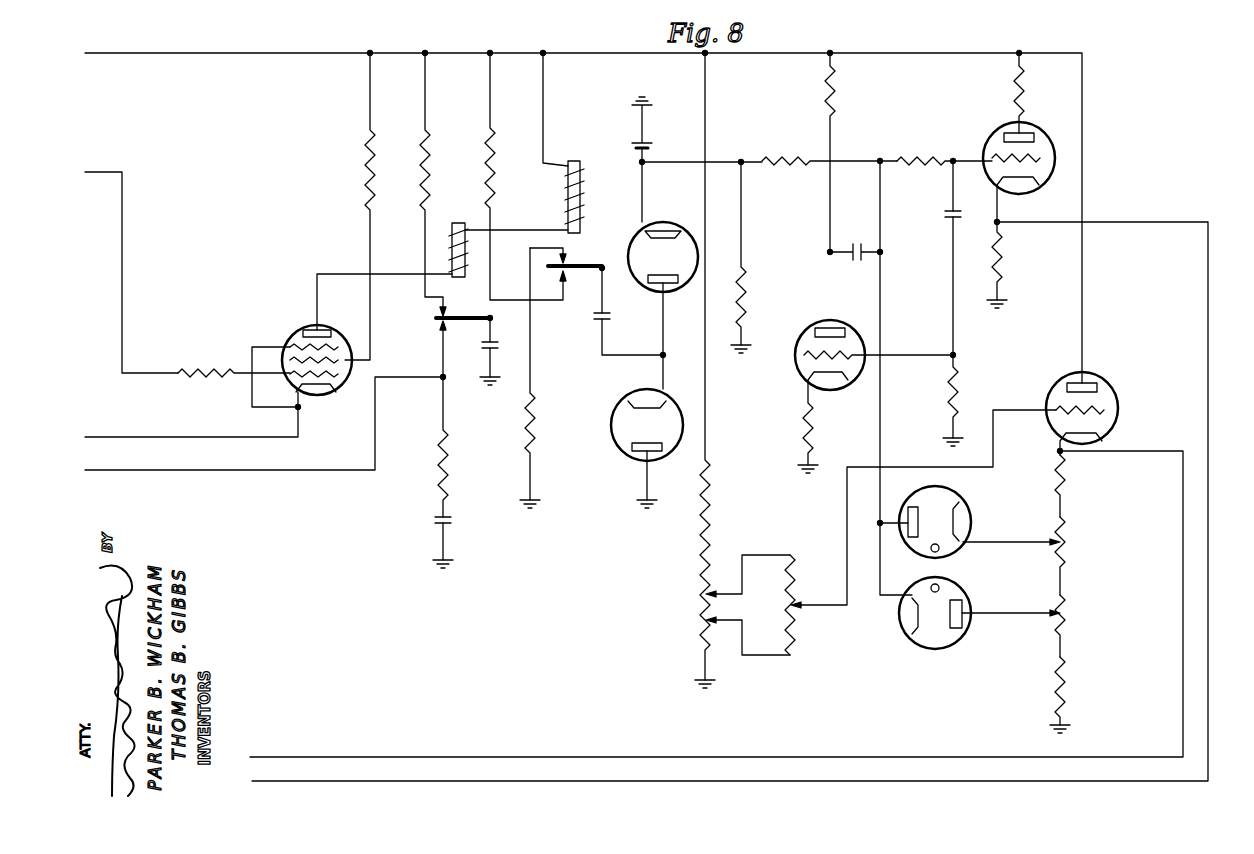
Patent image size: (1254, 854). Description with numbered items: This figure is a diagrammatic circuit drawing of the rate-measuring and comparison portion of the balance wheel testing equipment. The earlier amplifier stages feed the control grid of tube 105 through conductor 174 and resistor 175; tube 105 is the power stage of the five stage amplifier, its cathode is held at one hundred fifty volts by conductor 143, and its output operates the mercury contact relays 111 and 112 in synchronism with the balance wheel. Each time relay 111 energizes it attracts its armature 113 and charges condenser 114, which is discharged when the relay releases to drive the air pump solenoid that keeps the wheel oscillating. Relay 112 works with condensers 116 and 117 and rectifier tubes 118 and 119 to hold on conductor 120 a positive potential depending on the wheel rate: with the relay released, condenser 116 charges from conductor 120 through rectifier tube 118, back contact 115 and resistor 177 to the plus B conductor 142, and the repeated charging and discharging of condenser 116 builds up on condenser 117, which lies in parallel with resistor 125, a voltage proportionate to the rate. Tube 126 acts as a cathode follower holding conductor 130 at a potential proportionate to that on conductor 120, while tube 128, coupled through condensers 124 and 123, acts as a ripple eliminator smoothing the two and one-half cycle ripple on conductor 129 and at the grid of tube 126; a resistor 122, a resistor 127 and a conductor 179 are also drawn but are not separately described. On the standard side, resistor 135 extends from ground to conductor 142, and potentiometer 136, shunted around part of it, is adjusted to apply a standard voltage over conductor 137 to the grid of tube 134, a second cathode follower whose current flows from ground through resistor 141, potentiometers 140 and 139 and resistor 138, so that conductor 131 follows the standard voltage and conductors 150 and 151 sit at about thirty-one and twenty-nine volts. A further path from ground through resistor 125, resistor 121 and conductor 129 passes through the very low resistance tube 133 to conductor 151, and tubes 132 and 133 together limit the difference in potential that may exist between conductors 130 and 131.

The tube 105 is at (293, 332).
The relay 111 is at (452, 224).
The relay 112 is at (578, 164).
The armature 113 is at (467, 323).
The condenser 114 is at (496, 347).
The back contact 115 is at (582, 264).
The condenser 116 is at (590, 318).
The condenser 117 is at (651, 144).
The rectifier tube 118 is at (636, 284).
The rectifier tube 119 is at (612, 420).
The conductor 120 is at (720, 161).
The resistor 121 is at (781, 161).
The resistor 122 is at (917, 161).
The condenser 123 is at (855, 242).
The condenser 124 is at (945, 217).
The resistor 125 is at (750, 297).
The tube 126 is at (1037, 131).
The cathode resistor 127 is at (1004, 255).
The tube 128 is at (795, 369).
The conductor 129 is at (852, 161).
The conductor 130 is at (1148, 222).
The conductor 131 is at (1141, 452).
The tube 132 is at (961, 503).
The tube 133 is at (961, 635).
The tube 134 is at (1110, 396).
The resistor 135 is at (698, 558).
The potentiometer 136 is at (799, 593).
The conductor 137 is at (996, 460).
The resistor 138 is at (1066, 477).
The potentiometer 139 is at (1068, 556).
The potentiometer 140 is at (1068, 630).
The resistor 141 is at (1068, 684).
The plus B conductor 142 is at (285, 53).
The conductor 143 is at (176, 431).
The conductor 150 is at (1018, 541).
The conductor 151 is at (1018, 612).
The conductor 174 is at (124, 275).
The resistor 175 is at (208, 372).
The resistor 177 is at (494, 190).
The conductor 179 is at (299, 470).